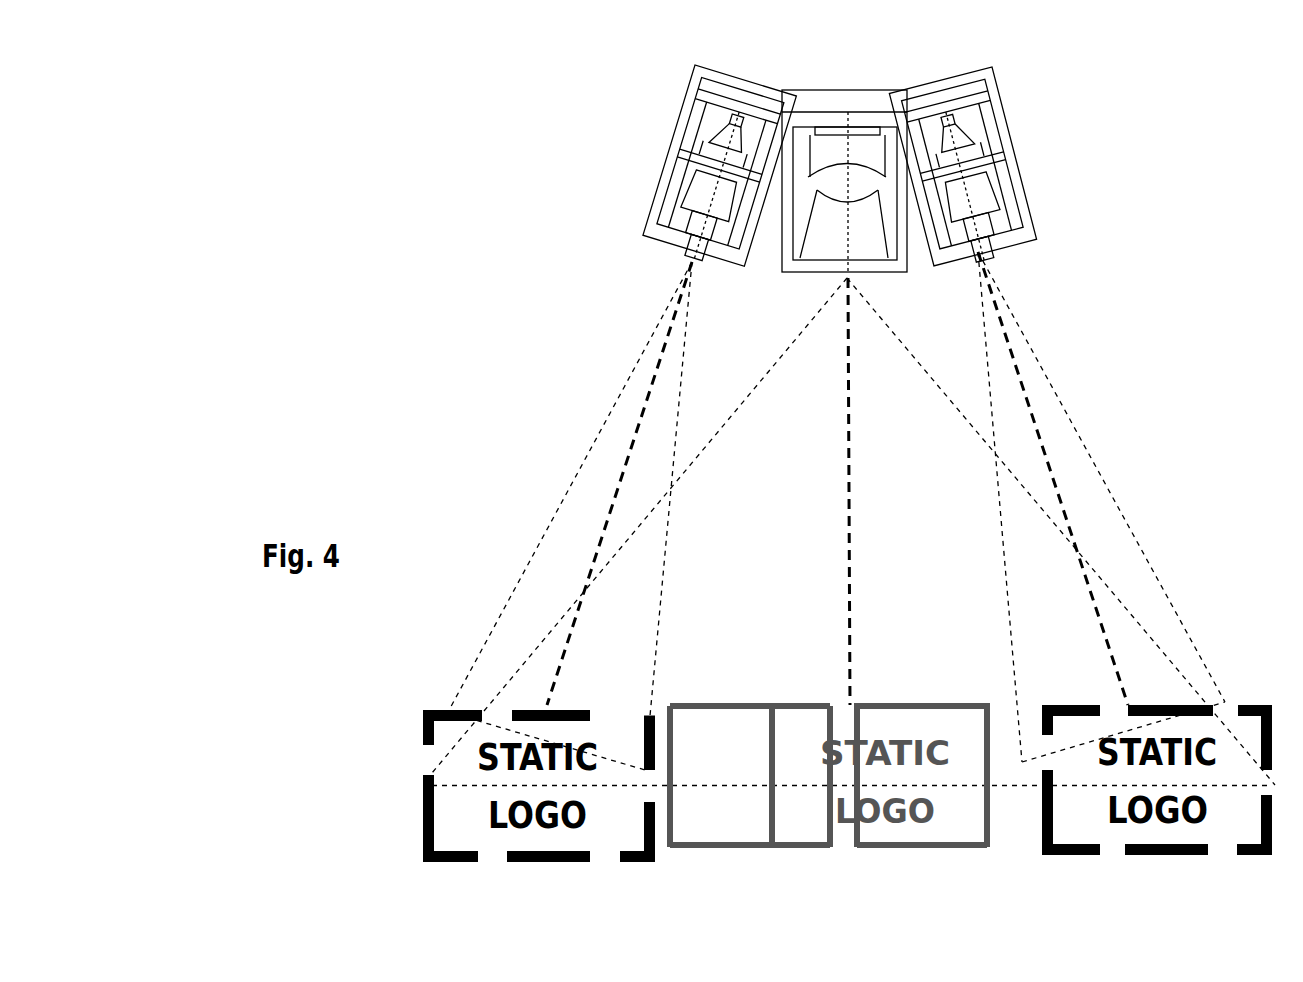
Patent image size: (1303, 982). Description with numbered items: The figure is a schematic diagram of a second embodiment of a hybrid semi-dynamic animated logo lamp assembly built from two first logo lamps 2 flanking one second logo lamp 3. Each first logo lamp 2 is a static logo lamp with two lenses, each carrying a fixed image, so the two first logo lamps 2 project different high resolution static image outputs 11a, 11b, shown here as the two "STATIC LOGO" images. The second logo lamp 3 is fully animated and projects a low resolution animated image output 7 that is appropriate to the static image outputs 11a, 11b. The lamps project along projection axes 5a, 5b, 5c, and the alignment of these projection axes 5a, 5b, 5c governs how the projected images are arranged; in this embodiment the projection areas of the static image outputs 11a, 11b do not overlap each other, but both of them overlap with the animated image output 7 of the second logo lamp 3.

The first logo lamp 2 is at (648, 157).
The second logo lamp 3 is at (847, 83).
The projection axis 5a is at (845, 556).
The projection axis 5b is at (1015, 348).
The projection axis 5c is at (627, 443).
The low resolution animated image output 7 is at (735, 408).
The high resolution static image output 11a is at (1098, 458).
The high resolution static image output 11b is at (568, 493).